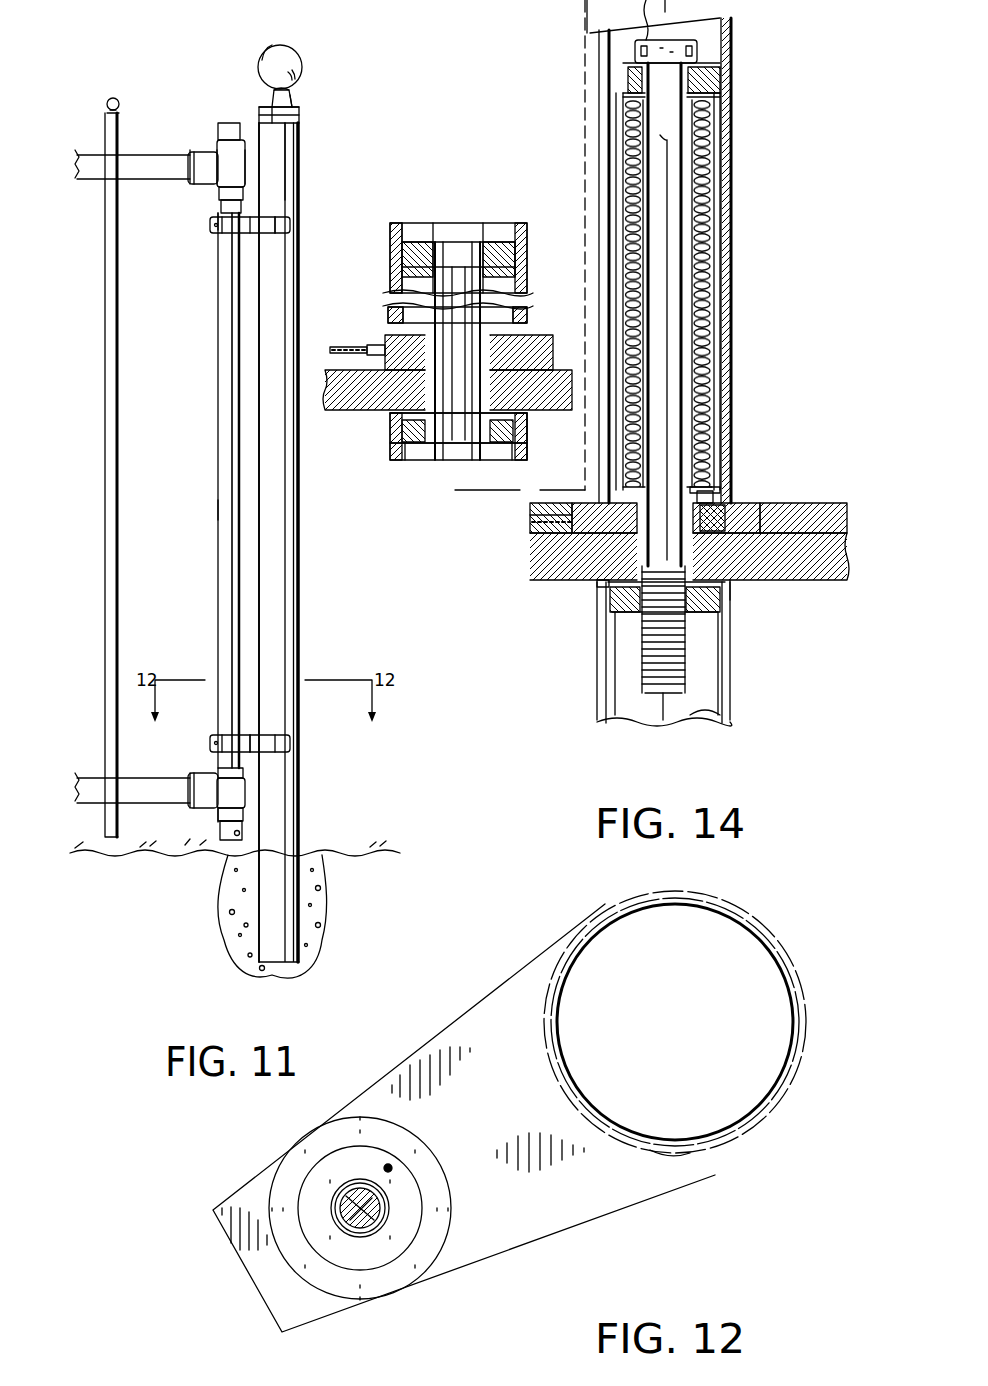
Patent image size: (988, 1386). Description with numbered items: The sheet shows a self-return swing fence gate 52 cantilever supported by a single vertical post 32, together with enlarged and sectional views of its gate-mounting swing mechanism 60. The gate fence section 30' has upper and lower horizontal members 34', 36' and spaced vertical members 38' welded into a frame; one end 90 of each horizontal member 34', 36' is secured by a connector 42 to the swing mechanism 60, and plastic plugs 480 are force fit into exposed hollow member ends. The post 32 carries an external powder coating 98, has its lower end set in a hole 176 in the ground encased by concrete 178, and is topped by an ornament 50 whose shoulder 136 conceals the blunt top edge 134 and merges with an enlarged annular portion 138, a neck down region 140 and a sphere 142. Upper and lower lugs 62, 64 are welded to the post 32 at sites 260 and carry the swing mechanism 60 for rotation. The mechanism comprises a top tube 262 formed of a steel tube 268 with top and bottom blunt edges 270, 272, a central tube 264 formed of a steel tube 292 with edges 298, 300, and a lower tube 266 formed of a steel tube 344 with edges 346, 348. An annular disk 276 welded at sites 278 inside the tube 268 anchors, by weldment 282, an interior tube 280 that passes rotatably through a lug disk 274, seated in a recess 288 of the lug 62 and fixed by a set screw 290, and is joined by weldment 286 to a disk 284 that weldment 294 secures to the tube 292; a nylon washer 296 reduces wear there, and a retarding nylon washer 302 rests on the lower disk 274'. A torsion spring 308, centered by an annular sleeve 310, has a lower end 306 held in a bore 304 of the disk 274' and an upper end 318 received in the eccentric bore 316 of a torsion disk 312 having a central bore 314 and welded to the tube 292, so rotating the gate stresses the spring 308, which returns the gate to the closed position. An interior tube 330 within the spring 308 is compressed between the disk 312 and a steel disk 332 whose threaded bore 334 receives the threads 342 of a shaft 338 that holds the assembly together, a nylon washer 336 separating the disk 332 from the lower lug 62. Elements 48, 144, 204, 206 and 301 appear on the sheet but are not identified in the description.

In FIG. 11, the gate fence section 30' is at (67, 144).
In FIG. 11, the post 32 is at (265, 425).
In FIG. 12, the post 32 is at (568, 1015).
In FIG. 11, the upper horizontal member 34' is at (133, 194).
In FIG. 11, the lower horizontal member 36' is at (131, 833).
In FIG. 11, the vertical members 38' is at (77, 475).
In FIG. 11, the connector 42 is at (212, 145).
In FIG. 11, the ball finial 48 is at (115, 82).
In FIG. 11, the ornament 50 is at (293, 32).
In FIG. 11, the swing fence gate 52 is at (190, 148).
In FIG. 11, the swing mechanism 60 is at (216, 510).
In FIG. 11, the lug 62 is at (262, 206).
In FIG. 14, the lug 62 is at (551, 340).
In FIG. 12, the lug 62 is at (455, 1022).
In FIG. 11, the lower lug 64 is at (258, 737).
In FIG. 11, the ends 90 is at (178, 186).
In FIG. 11, the powder coating 98 is at (275, 152).
In FIG. 14, the powder coating 98 is at (521, 262).
In FIG. 12, the powder coating 98 is at (808, 1020).
In FIG. 11, the top edge 134 is at (294, 104).
In FIG. 11, the shoulder 136 is at (268, 106).
In FIG. 11, the enlarged annular portion 138 is at (296, 110).
In FIG. 11, the neck down region 140 is at (268, 96).
In FIG. 11, the sphere 142 is at (275, 48).
In FIG. 11, the collar 144 is at (300, 120).
In FIG. 11, the hole 176 is at (332, 888).
In FIG. 11, the concrete 178 is at (318, 937).
In FIG. 11, the pipe 204 is at (211, 228).
In FIG. 11, the pipe 206 is at (203, 836).
In FIG. 11, the weld sites 260 is at (260, 222).
In FIG. 12, the weld sites 260 is at (678, 1162).
In FIG. 11, the top tube 262 is at (250, 132).
In FIG. 14, the top tube 262 is at (385, 245).
In FIG. 11, the central tube 264 is at (218, 339).
In FIG. 14, the central tube 264 is at (555, 490).
In FIG. 11, the lower tube 266 is at (250, 830).
In FIG. 14, the lower tube 266 is at (592, 724).
In FIG. 14, the steel tube 268 is at (522, 223).
In FIG. 14, the top blunt edge 270 is at (393, 223).
In FIG. 14, the bottom blunt edge 272 is at (520, 321).
In FIG. 14, the lug disk 274 is at (446, 470).
In FIG. 12, the lower metal disk 274' is at (360, 1227).
In FIG. 14, the annular disk 276 is at (466, 223).
In FIG. 14, the weld sites 278 is at (410, 235).
In FIG. 14, the interior tube 280 is at (395, 300).
In FIG. 14, the annular weldment 282 is at (522, 256).
In FIG. 14, the annular disk 284 is at (430, 456).
In FIG. 14, the annular weldment 286 is at (470, 463).
In FIG. 14, the annular recess 288 is at (483, 358).
In FIG. 14, the set screw 290 is at (392, 412).
In FIG. 14, the steel tube 292 is at (730, 407).
In FIG. 14, the annular weldment 294 is at (492, 456).
In FIG. 14, the nylon washer 296 is at (392, 432).
In FIG. 14, the top blunt edge 298 is at (487, 396).
In FIG. 14, the bottom blunt edge 300 is at (620, 526).
In FIG. 14, the washer 301 is at (715, 480).
In FIG. 14, the retarding nylon washer 302 is at (612, 557).
In FIG. 12, the retarding nylon washer 302 is at (393, 1240).
In FIG. 14, the bore 304 is at (760, 575).
In FIG. 12, the bore 304 is at (373, 1157).
In FIG. 14, the lower spring end 306 is at (737, 503).
In FIG. 12, the lower spring end 306 is at (392, 1166).
In FIG. 14, the torsion spring 308 is at (714, 358).
In FIG. 14, the annular sleeve 310 is at (542, 442).
In FIG. 14, the torsion disk 312 is at (722, 78).
In FIG. 14, the central bore 314 is at (725, 96).
In FIG. 14, the eccentric bore 316 is at (620, 55).
In FIG. 14, the upper spring end 318 is at (618, 97).
In FIG. 14, the interior tube 330 is at (708, 170).
In FIG. 12, the interior tube 330 is at (330, 1197).
In FIG. 14, the steel disk 332 is at (722, 603).
In FIG. 14, the threaded bore 334 is at (644, 615).
In FIG. 14, the nylon washer 336 is at (603, 585).
In FIG. 14, the shaft 338 is at (716, 140).
In FIG. 12, the shaft 338 is at (388, 1203).
In FIG. 14, the threads 342 is at (663, 702).
In FIG. 14, the steel tube 344 is at (706, 702).
In FIG. 14, the top blunt edge 346 is at (735, 595).
In FIG. 11, the lower edge 348 is at (243, 834).
In FIG. 11, the plastic plugs 480 is at (222, 122).